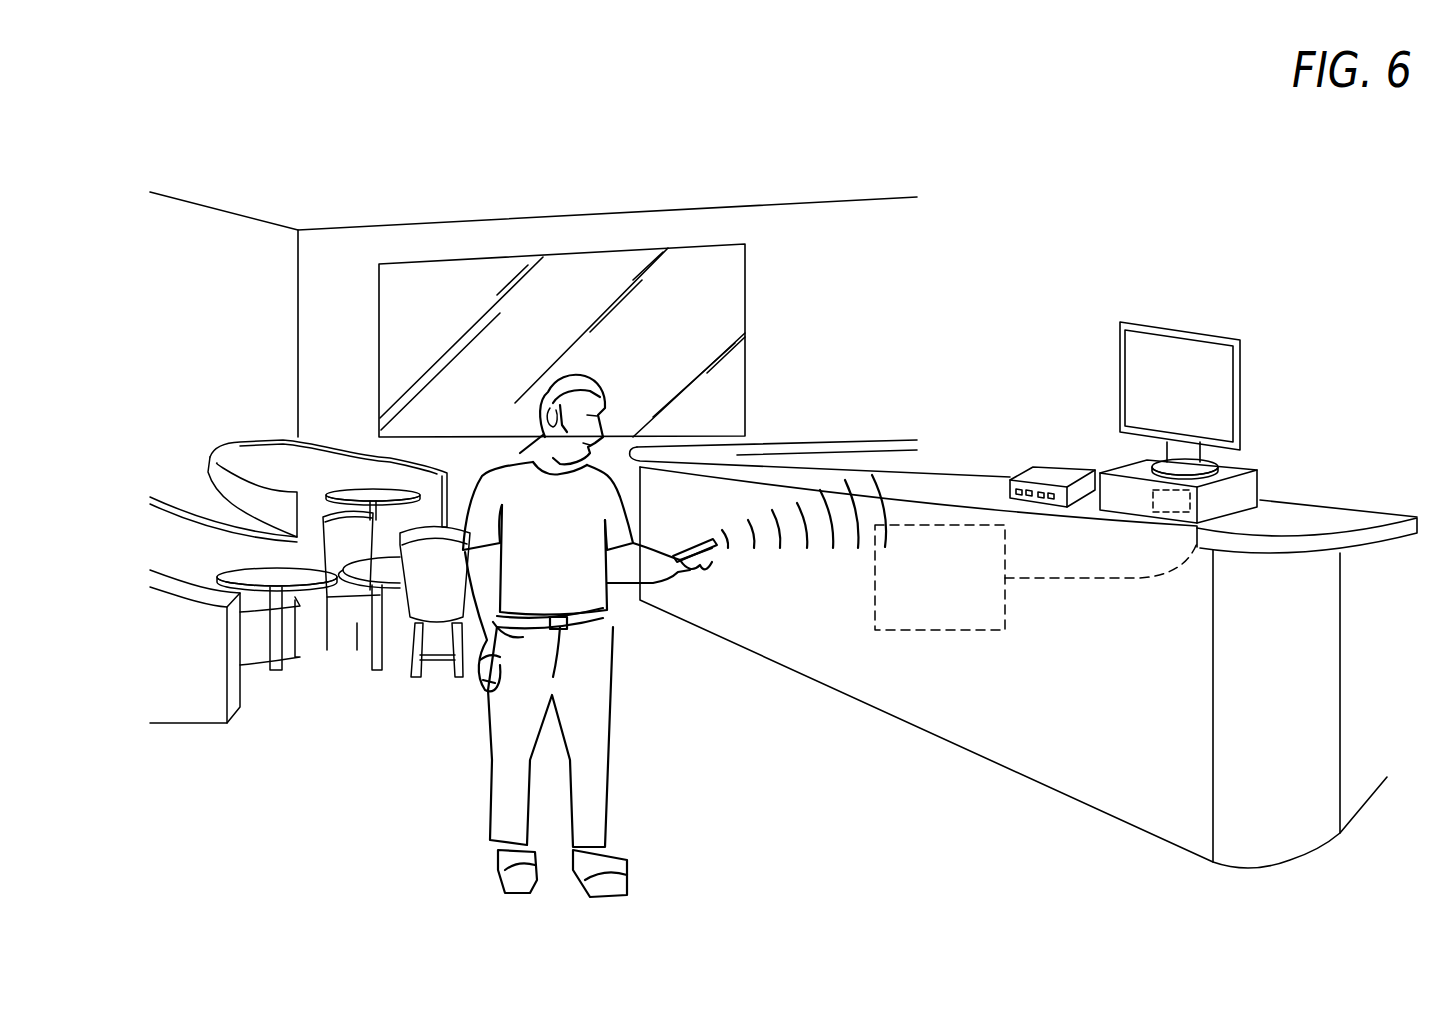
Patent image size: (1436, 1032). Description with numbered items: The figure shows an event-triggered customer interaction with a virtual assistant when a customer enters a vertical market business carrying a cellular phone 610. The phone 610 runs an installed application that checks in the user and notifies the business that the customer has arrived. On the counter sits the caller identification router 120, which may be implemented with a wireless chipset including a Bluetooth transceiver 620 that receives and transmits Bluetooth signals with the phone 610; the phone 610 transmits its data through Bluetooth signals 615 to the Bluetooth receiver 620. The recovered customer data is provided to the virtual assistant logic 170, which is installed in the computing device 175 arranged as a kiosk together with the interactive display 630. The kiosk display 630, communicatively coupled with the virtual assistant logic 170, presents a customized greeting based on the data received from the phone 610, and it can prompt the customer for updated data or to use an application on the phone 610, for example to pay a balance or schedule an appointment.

The caller identification router 120 is at (1037, 470).
The virtual assistant logic 170 is at (1190, 503).
The computing device 175 is at (1243, 467).
The cellular phone 610 is at (677, 563).
The Bluetooth signals 615 is at (817, 548).
The Bluetooth transceiver 620 is at (941, 630).
The interactive display 630 is at (1205, 330).